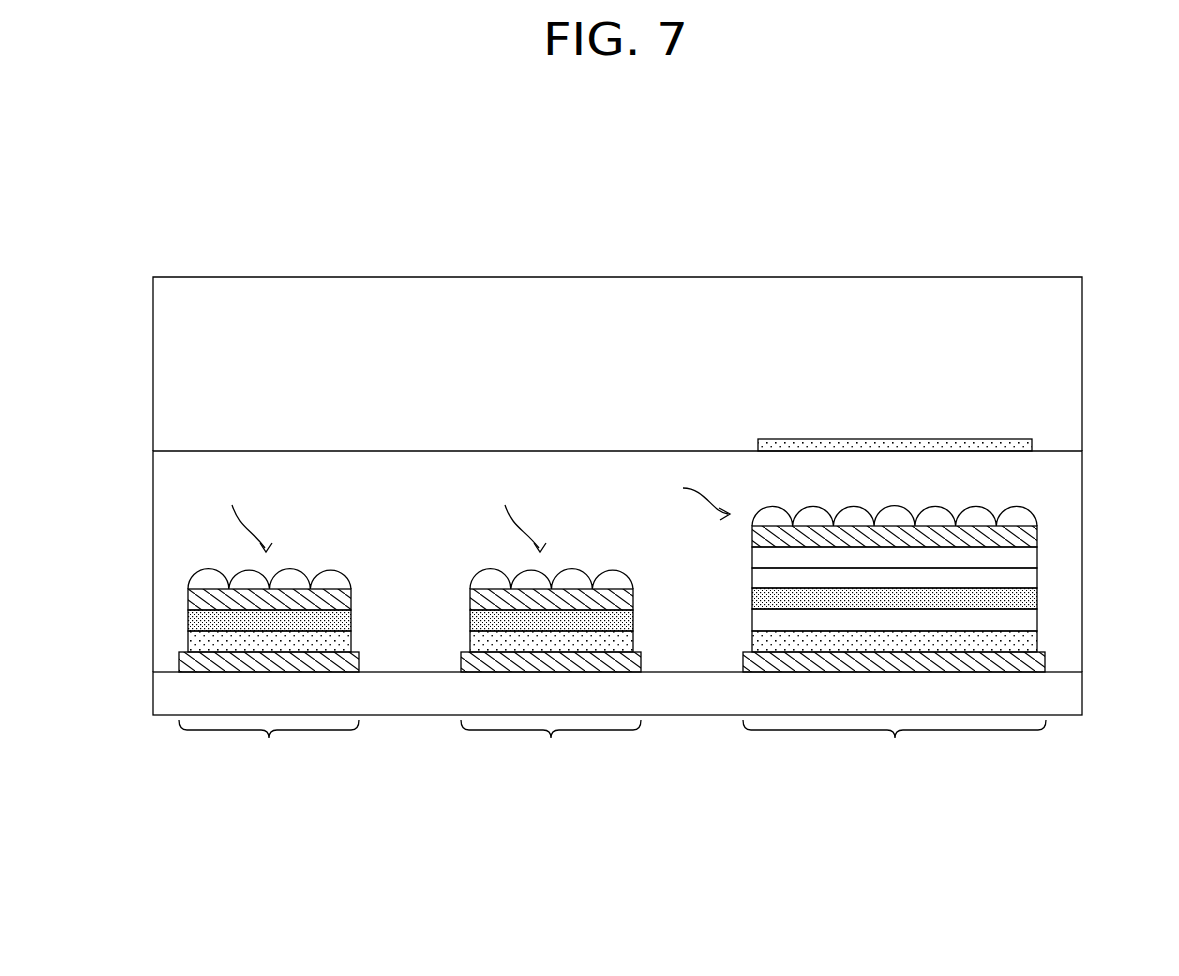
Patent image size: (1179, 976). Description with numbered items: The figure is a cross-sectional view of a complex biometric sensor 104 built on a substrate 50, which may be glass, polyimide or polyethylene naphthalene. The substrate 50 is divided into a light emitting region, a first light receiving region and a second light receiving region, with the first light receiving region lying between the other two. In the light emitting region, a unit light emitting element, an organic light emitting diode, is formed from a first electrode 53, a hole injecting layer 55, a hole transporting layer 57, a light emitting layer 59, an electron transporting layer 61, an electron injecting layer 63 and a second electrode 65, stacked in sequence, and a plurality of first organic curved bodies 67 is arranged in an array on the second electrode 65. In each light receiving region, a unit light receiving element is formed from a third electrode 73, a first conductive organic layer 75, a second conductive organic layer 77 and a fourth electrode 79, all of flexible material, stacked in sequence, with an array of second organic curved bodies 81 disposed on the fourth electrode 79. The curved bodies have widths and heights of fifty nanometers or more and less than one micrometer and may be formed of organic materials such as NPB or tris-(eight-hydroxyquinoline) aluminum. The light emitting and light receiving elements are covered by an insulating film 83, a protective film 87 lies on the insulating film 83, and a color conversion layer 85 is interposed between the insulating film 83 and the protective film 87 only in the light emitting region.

The complex biometric sensor 104 is at (1069, 202).
The substrate 50 is at (163, 697).
The first electrode 53 is at (1030, 663).
The hole injecting layer 55 is at (1027, 641).
The hole transporting layer 57 is at (1027, 620).
The light emitting layer 59 is at (1027, 599).
The electron transporting layer 61 is at (1027, 578).
The electron injecting layer 63 is at (1027, 557).
The second electrode 65 is at (1027, 537).
The first organic curved body 67 is at (1025, 517).
The third electrode 73 is at (190, 663).
The first conductive organic layer 75 is at (198, 641).
The second conductive organic layer 77 is at (198, 620).
The fourth electrode 79 is at (198, 600).
The second organic curved body 81 is at (198, 578).
The insulating film 83 is at (163, 487).
The color conversion layer 85 is at (1024, 443).
The protective film 87 is at (163, 363).